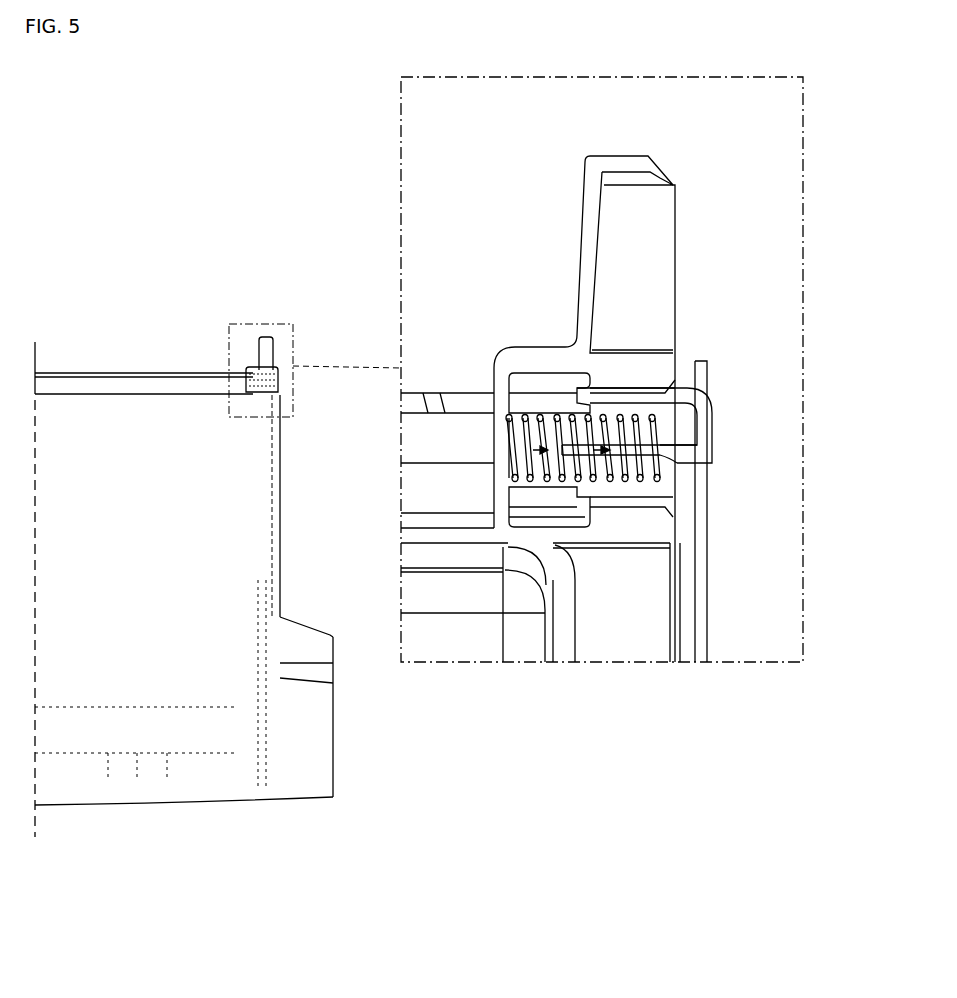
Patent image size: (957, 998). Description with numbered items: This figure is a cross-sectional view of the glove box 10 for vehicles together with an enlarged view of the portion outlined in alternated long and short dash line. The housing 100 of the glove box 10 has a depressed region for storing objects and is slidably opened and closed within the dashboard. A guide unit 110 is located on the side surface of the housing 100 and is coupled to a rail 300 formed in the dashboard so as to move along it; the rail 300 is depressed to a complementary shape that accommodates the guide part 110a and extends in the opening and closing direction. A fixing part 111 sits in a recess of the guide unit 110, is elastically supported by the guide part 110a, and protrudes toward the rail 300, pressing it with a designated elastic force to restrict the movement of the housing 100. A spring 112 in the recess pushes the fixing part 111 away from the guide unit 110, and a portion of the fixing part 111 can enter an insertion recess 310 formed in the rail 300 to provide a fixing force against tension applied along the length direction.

The glove box 10 is at (137, 805).
The housing 100 is at (80, 445).
The guide unit 110 is at (623, 628).
The guide part 110a is at (265, 438).
The fixing part 111 is at (280, 354).
The spring 112 is at (645, 480).
The rail 300 is at (782, 458).
The insertion recess 310 is at (703, 403).